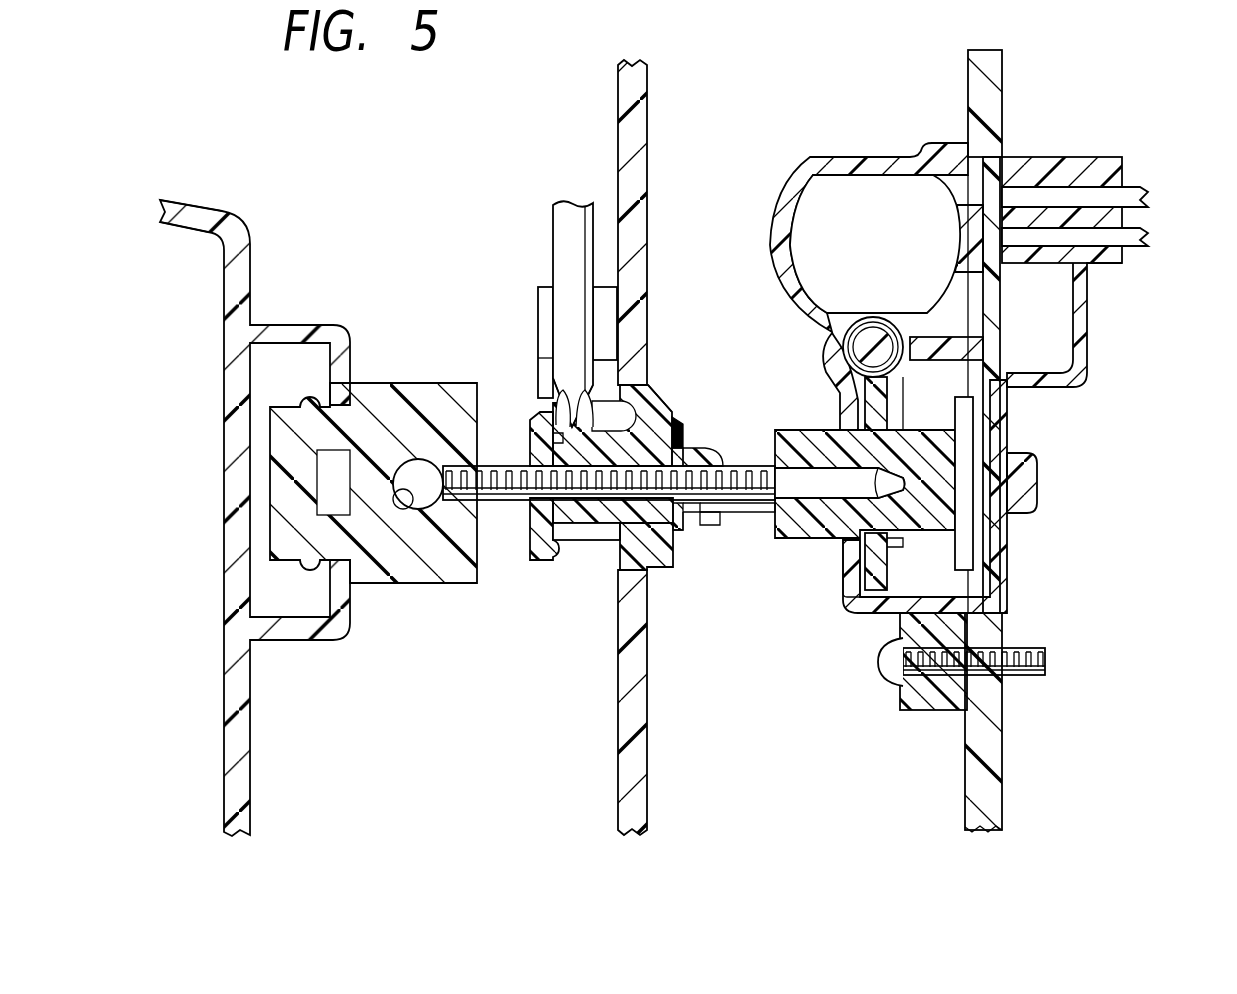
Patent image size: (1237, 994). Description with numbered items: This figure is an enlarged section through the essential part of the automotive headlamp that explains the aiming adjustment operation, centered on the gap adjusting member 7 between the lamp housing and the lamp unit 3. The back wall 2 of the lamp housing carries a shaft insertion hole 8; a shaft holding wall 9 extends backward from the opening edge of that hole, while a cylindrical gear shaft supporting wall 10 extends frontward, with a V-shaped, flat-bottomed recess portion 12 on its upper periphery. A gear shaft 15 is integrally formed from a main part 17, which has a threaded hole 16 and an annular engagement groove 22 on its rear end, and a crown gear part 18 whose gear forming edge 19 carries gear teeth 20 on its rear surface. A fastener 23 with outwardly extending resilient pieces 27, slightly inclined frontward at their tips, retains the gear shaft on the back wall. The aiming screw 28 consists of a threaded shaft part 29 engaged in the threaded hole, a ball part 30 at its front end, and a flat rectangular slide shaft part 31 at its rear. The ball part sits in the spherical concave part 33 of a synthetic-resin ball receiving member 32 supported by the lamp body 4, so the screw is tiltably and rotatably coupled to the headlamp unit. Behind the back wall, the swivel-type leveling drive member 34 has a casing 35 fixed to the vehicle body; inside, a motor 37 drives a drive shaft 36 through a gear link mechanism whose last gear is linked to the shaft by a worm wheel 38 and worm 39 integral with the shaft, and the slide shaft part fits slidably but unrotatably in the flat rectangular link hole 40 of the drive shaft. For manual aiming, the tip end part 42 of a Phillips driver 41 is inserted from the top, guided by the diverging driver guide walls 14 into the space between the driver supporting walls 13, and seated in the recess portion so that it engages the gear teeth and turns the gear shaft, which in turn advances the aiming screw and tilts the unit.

The back wall 2 is at (650, 826).
The lamp unit 3 is at (197, 210).
The lamp body 4 is at (250, 827).
The gap adjusting member 7 is at (450, 228).
The shaft insertion hole 8 is at (670, 410).
The shaft holding wall 9 is at (657, 447).
The gear shaft supporting wall 10 is at (600, 541).
The recess portion 12 is at (600, 400).
The driver supporting walls 13 is at (535, 417).
The driver guide walls 14 is at (550, 300).
The gear shaft 15 is at (714, 508).
The threaded hole 16 is at (678, 508).
The main part 17 is at (605, 420).
The crown gear part 18 is at (535, 530).
The gear forming edge 19 is at (560, 541).
The gear teeth 20 is at (520, 415).
The engagement groove 22 is at (680, 432).
The fastener 23 is at (678, 520).
The resilient pieces 27 is at (672, 425).
The aiming screw 28 is at (490, 501).
The threaded shaft part 29 is at (745, 505).
The ball part 30 is at (410, 462).
The slide shaft part 31 is at (907, 470).
The ball receiving member 32 is at (410, 585).
The spherical concave part 33 is at (407, 492).
The leveling drive member 34 is at (840, 158).
The casing 35 is at (1062, 345).
The drive shaft 36 is at (945, 524).
The motor 37 is at (835, 185).
The worm wheel 38 is at (890, 575).
The worm 39 is at (905, 342).
The link hole 40 is at (975, 490).
The Phillips driver 41 is at (562, 240).
The tip end part 42 is at (558, 402).